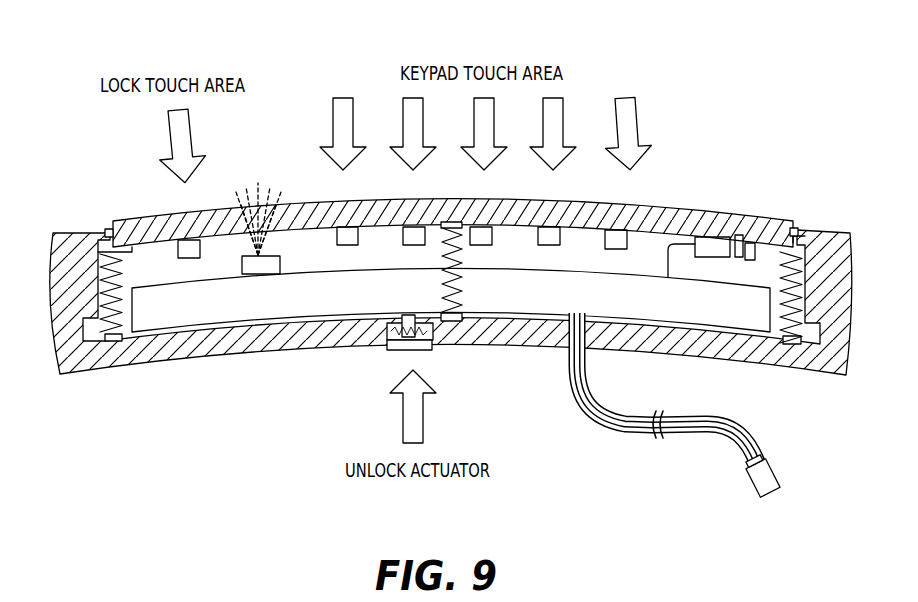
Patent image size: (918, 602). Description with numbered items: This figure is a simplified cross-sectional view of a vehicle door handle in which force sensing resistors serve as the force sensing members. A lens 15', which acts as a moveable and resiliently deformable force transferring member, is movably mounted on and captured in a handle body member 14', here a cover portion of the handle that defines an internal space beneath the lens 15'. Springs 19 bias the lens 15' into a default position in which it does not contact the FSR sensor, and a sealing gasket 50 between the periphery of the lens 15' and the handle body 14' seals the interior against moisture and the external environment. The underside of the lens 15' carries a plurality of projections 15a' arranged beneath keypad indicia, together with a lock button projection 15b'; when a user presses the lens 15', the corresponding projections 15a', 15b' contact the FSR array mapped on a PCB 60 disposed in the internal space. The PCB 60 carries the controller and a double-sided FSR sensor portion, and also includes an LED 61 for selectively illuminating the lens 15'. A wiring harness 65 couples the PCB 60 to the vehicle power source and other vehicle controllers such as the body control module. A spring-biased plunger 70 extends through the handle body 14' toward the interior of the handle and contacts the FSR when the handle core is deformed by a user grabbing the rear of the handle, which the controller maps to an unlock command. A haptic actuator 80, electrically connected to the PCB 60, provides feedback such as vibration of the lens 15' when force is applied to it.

The handle body member 14' is at (439, 326).
The lens 15' is at (451, 201).
The projections 15a' is at (462, 210).
The projection 15b' is at (154, 216).
The spring 19 is at (121, 302).
The sealing gasket 50 is at (109, 230).
The PCB 60 is at (321, 318).
The LED 61 is at (259, 274).
The wiring harness 65 is at (695, 433).
The spring-biased plunger 70 is at (427, 350).
The haptic actuator 80 is at (712, 237).